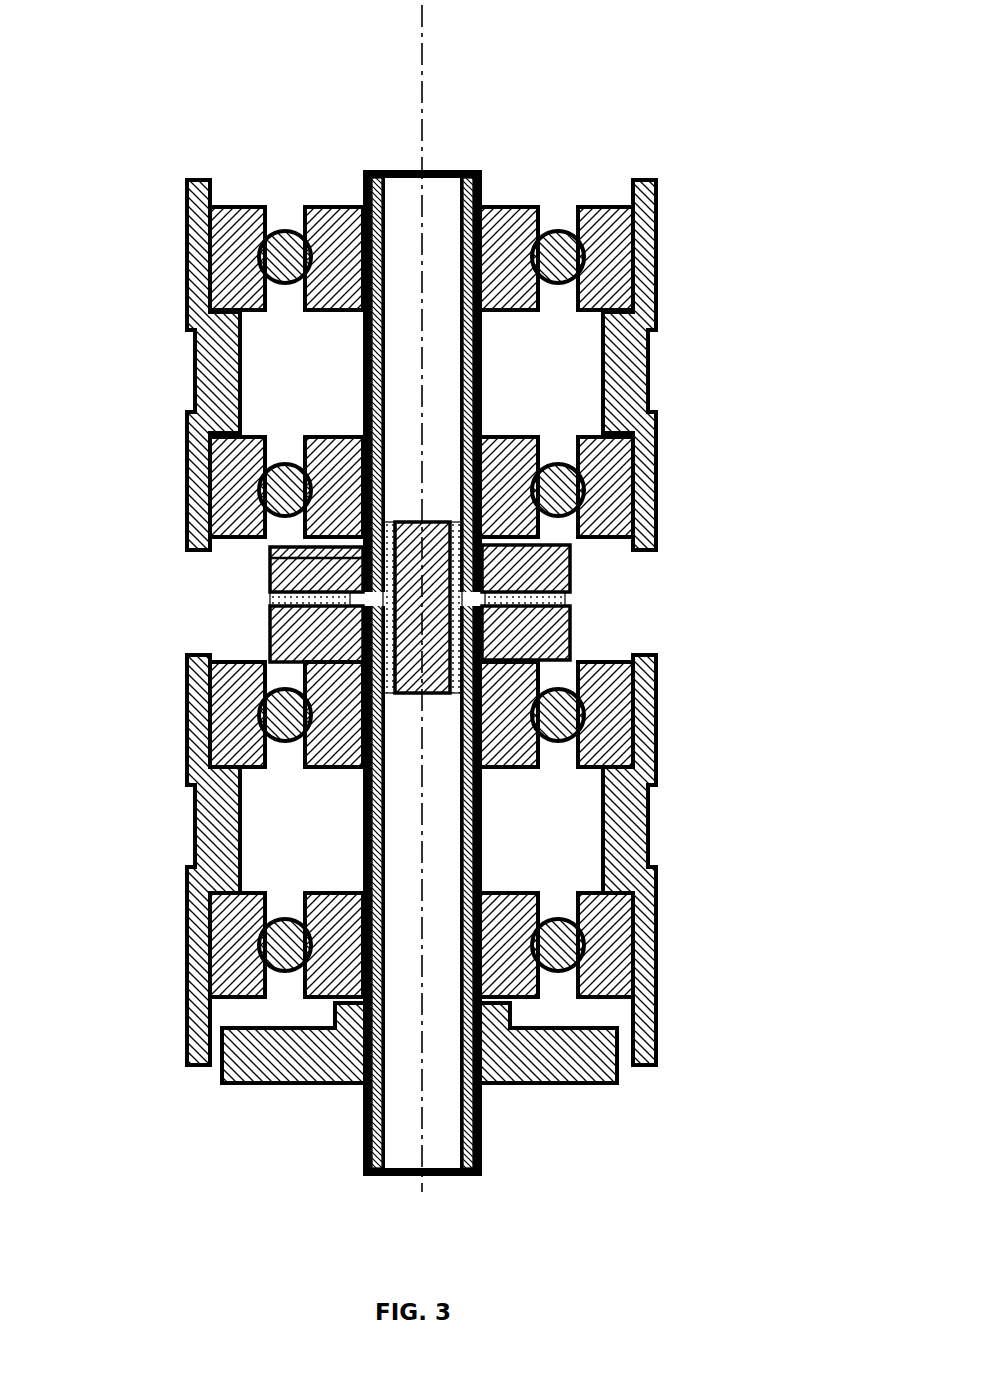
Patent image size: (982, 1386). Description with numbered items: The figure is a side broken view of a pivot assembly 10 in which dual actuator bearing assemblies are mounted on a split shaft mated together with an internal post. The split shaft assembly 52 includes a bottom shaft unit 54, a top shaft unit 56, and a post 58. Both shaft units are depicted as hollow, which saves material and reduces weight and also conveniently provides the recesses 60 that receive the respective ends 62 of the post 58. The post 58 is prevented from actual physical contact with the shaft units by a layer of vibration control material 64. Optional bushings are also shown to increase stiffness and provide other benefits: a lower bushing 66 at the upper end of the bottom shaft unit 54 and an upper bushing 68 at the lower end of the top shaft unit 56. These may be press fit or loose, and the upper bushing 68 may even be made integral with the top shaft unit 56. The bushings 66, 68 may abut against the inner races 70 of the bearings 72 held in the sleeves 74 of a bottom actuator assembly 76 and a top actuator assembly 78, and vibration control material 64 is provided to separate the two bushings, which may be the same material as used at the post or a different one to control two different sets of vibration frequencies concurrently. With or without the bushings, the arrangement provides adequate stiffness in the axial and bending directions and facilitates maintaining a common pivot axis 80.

The pivot assembly 10 is at (730, 122).
The split shaft assembly 52 is at (397, 146).
The bottom shaft unit 54 is at (518, 1083).
The top shaft unit 56 is at (470, 652).
The post 58 is at (413, 672).
The recesses 60 is at (437, 477).
The ends 62 is at (417, 619).
The vibration control material 64 is at (270, 558).
The lower bushing 66 is at (570, 645).
The upper bushing 68 is at (570, 565).
The inner races 70 is at (335, 312).
The bearings 72 is at (406, 325).
The sleeves 74 is at (648, 378).
The bottom actuator assembly 76 is at (142, 832).
The top actuator assembly 78 is at (345, 332).
The common pivot axis 80 is at (422, 42).